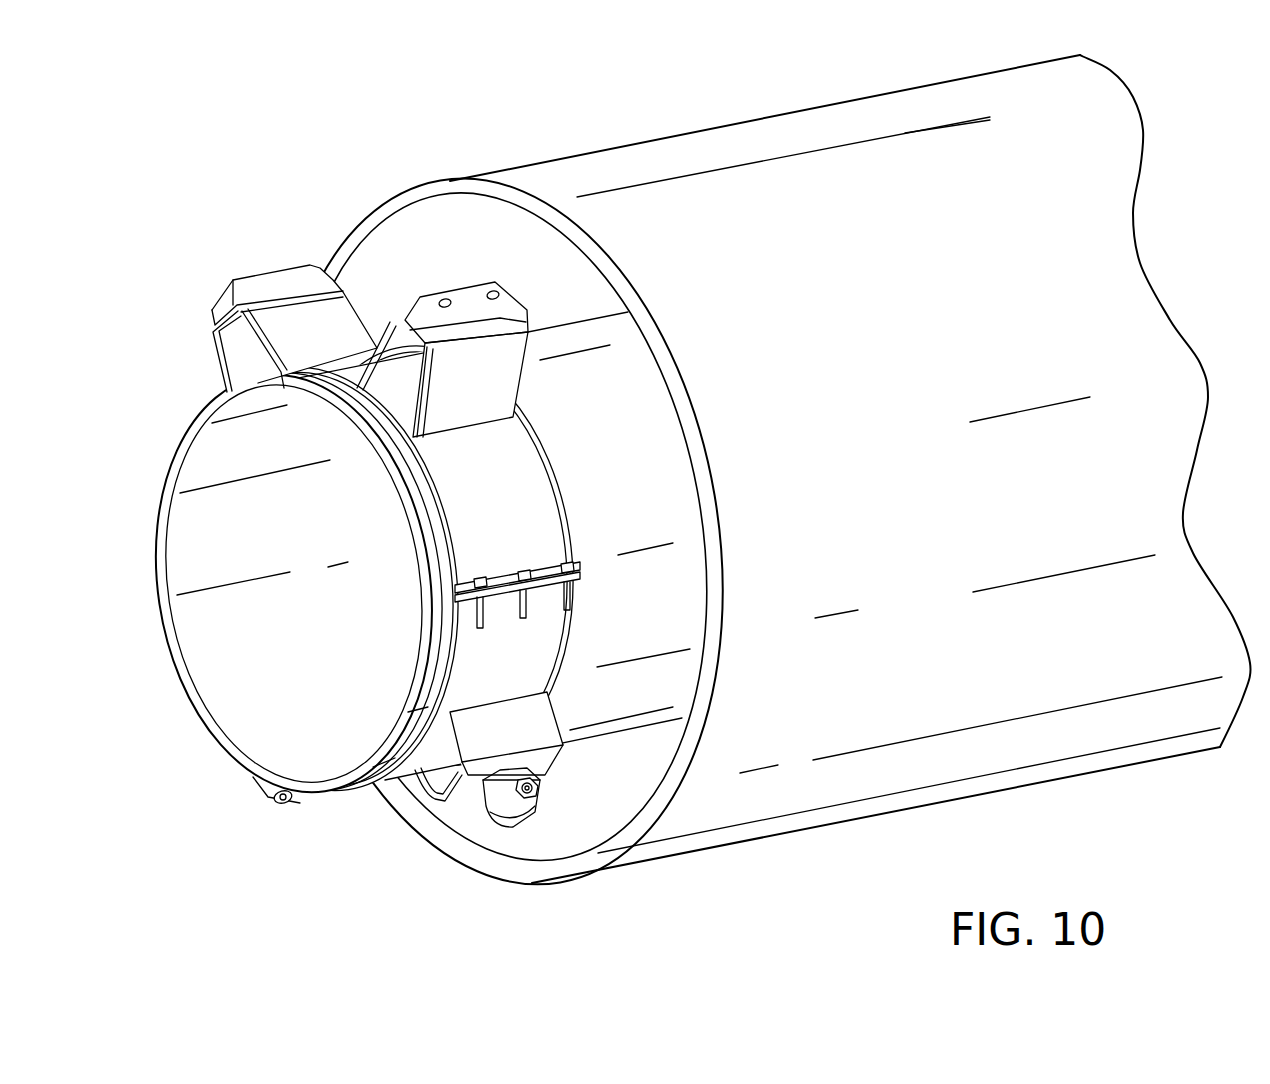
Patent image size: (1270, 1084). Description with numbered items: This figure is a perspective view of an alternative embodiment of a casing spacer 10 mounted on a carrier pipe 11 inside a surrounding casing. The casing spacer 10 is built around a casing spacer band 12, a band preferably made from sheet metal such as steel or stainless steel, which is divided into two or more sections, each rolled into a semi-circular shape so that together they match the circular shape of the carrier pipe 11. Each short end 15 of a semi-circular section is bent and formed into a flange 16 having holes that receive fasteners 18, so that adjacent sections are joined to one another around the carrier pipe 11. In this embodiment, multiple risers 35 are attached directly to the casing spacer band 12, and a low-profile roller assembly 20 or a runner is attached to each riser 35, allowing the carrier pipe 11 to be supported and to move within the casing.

The casing spacer 10 is at (524, 520).
The carrier pipe 11 is at (330, 702).
The casing spacer band 12 is at (495, 470).
The short end 15 is at (544, 578).
The flange 16 is at (524, 575).
The fastener 18 is at (480, 587).
The roller assembly 20 is at (390, 853).
The riser 35 is at (324, 340).